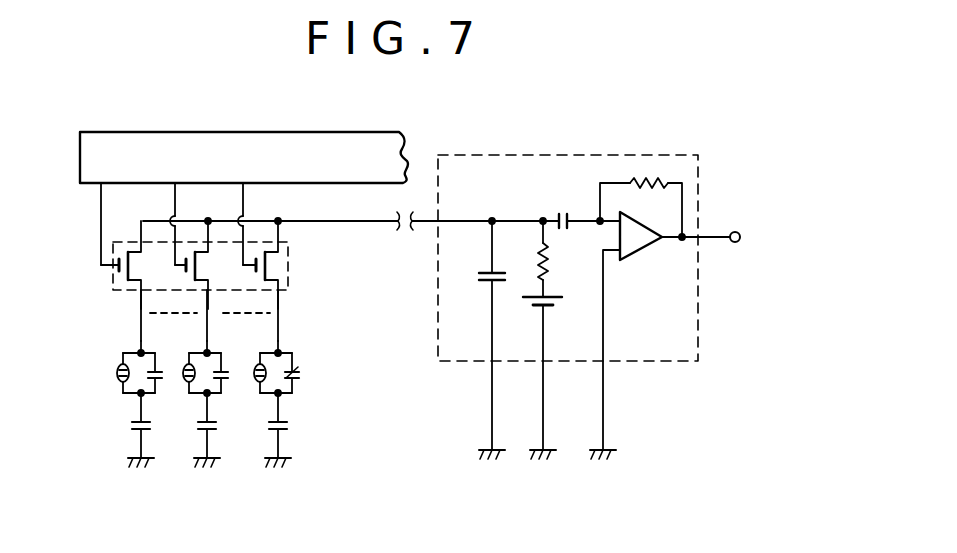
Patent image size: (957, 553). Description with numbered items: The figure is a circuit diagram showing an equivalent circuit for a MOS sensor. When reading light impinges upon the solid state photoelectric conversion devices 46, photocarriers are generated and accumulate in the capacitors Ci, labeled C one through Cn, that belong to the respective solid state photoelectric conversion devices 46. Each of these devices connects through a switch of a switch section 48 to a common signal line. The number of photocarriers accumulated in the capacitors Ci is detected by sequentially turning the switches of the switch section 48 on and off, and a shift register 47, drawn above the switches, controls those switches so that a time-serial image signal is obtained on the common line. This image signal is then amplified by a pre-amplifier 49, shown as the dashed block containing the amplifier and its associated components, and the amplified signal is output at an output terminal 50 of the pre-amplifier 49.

The solid state photoelectric conversion device 46 is at (115, 405).
The shift register 47 is at (90, 185).
The switch section 48 is at (113, 270).
The pre-amplifier 49 is at (645, 362).
The output terminal 50 is at (741, 236).